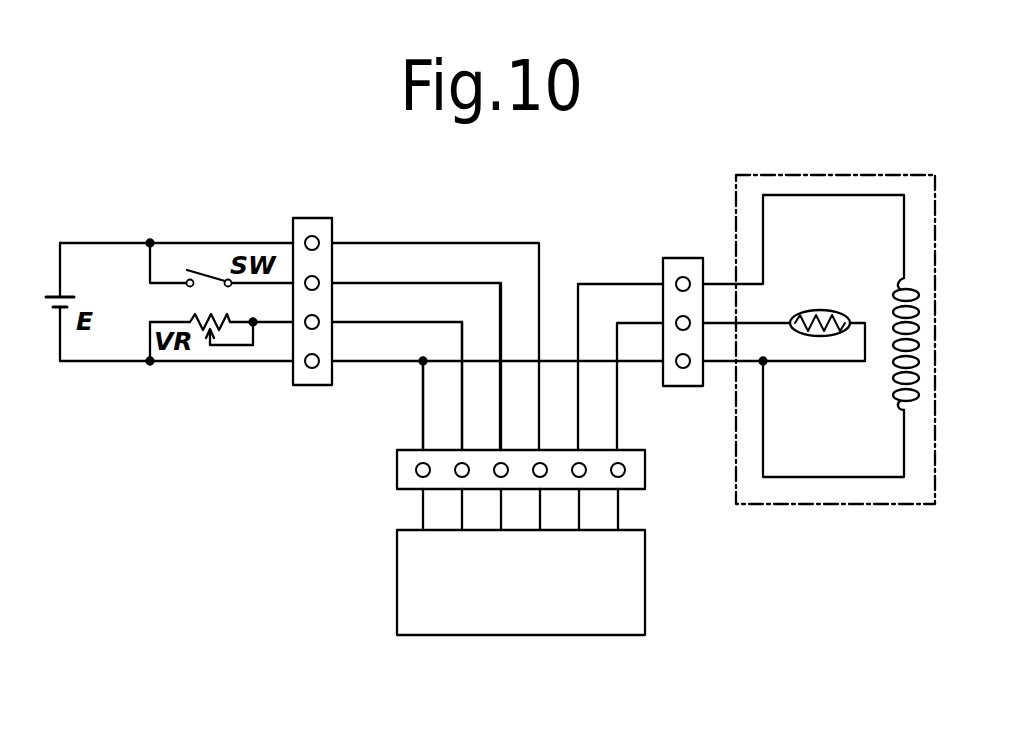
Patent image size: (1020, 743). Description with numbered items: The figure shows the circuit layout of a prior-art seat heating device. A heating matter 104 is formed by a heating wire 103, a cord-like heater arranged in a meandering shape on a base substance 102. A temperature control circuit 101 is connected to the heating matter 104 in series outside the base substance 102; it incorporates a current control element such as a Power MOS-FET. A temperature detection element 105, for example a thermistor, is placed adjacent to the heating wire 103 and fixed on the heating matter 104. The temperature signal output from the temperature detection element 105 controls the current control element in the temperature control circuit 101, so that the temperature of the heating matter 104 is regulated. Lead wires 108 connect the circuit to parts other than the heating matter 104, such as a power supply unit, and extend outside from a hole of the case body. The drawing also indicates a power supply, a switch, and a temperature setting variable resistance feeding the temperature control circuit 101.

The temperature control circuit 101 is at (397, 560).
The base substance 102 is at (896, 497).
The heating wire 103 is at (893, 392).
The heating matter 104 is at (755, 518).
The temperature detection element 105 is at (815, 310).
The lead wires 108 is at (501, 425).